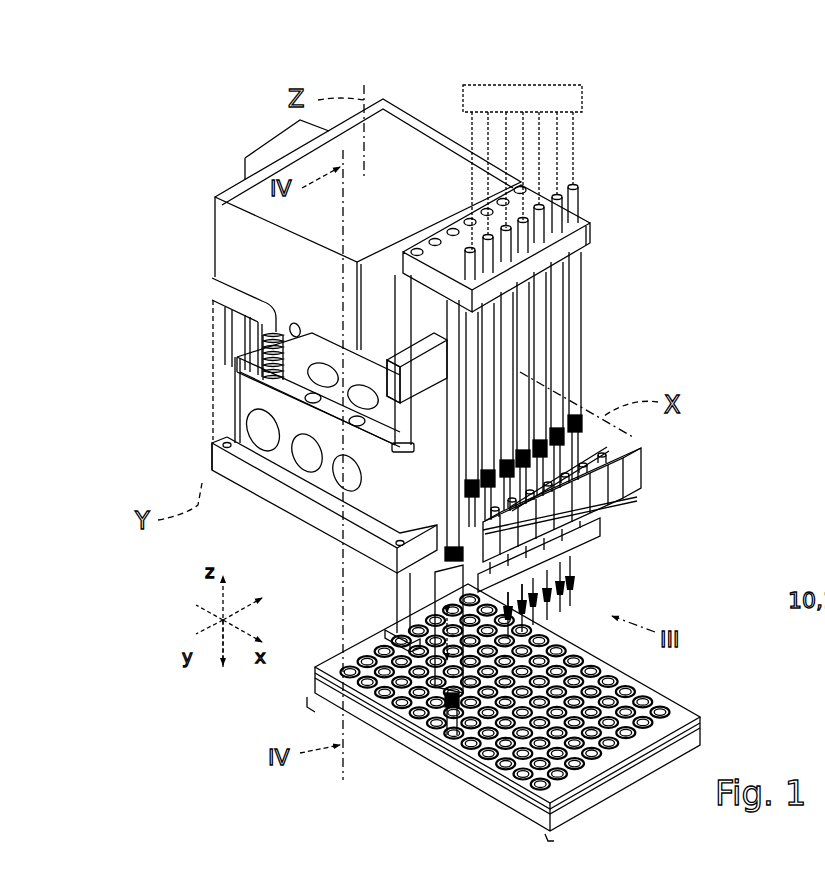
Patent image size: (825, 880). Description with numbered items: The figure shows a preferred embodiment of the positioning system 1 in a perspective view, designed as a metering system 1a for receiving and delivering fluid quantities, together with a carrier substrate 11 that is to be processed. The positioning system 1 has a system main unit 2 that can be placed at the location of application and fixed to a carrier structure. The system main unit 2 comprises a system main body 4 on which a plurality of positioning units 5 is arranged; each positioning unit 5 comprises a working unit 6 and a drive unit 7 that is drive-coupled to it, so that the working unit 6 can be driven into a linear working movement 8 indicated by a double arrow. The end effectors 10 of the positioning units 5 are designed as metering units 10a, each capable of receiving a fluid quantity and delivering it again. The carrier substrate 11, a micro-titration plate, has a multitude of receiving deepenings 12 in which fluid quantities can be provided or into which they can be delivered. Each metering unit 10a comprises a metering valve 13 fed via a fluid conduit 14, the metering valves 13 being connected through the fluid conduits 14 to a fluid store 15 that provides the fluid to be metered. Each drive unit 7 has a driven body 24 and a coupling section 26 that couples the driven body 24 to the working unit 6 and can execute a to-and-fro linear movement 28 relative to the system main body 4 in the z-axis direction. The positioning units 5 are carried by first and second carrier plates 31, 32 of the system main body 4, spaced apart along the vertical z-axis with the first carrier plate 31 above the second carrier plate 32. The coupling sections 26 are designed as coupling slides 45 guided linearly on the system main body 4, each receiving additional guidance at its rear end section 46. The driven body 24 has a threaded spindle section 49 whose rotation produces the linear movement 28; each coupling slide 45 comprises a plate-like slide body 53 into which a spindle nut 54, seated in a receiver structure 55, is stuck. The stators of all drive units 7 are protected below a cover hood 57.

The positioning system 1 is at (660, 196).
The metering system 1a is at (660, 196).
The system main unit 2 is at (208, 235).
The system main body 4 is at (218, 462).
The positioning unit 5 is at (620, 466).
The working unit 6 is at (550, 343).
The drive unit 7 is at (285, 352).
The linear working movement 8 is at (450, 700).
The end effector 10 is at (620, 580).
The metering unit 10a is at (515, 595).
The carrier substrate 11 is at (572, 805).
The receiving deepenings 12 is at (655, 740).
The metering valve 13 is at (625, 515).
The fluid conduit 14 is at (566, 272).
The fluid store 15 is at (563, 98).
The driven body 24 is at (243, 305).
The coupling section 26 is at (372, 505).
The linear movement 28 is at (238, 402).
The first carrier plate 31 is at (225, 292).
The second carrier plate 32 is at (262, 432).
The coupling slide 45 is at (393, 381).
The rear end section 46 is at (262, 432).
The threaded spindle section 49 is at (268, 337).
The slide body 53 is at (385, 507).
The spindle nut 54 is at (208, 478).
The receiver structure 55 is at (345, 476).
The cover hood 57 is at (403, 130).